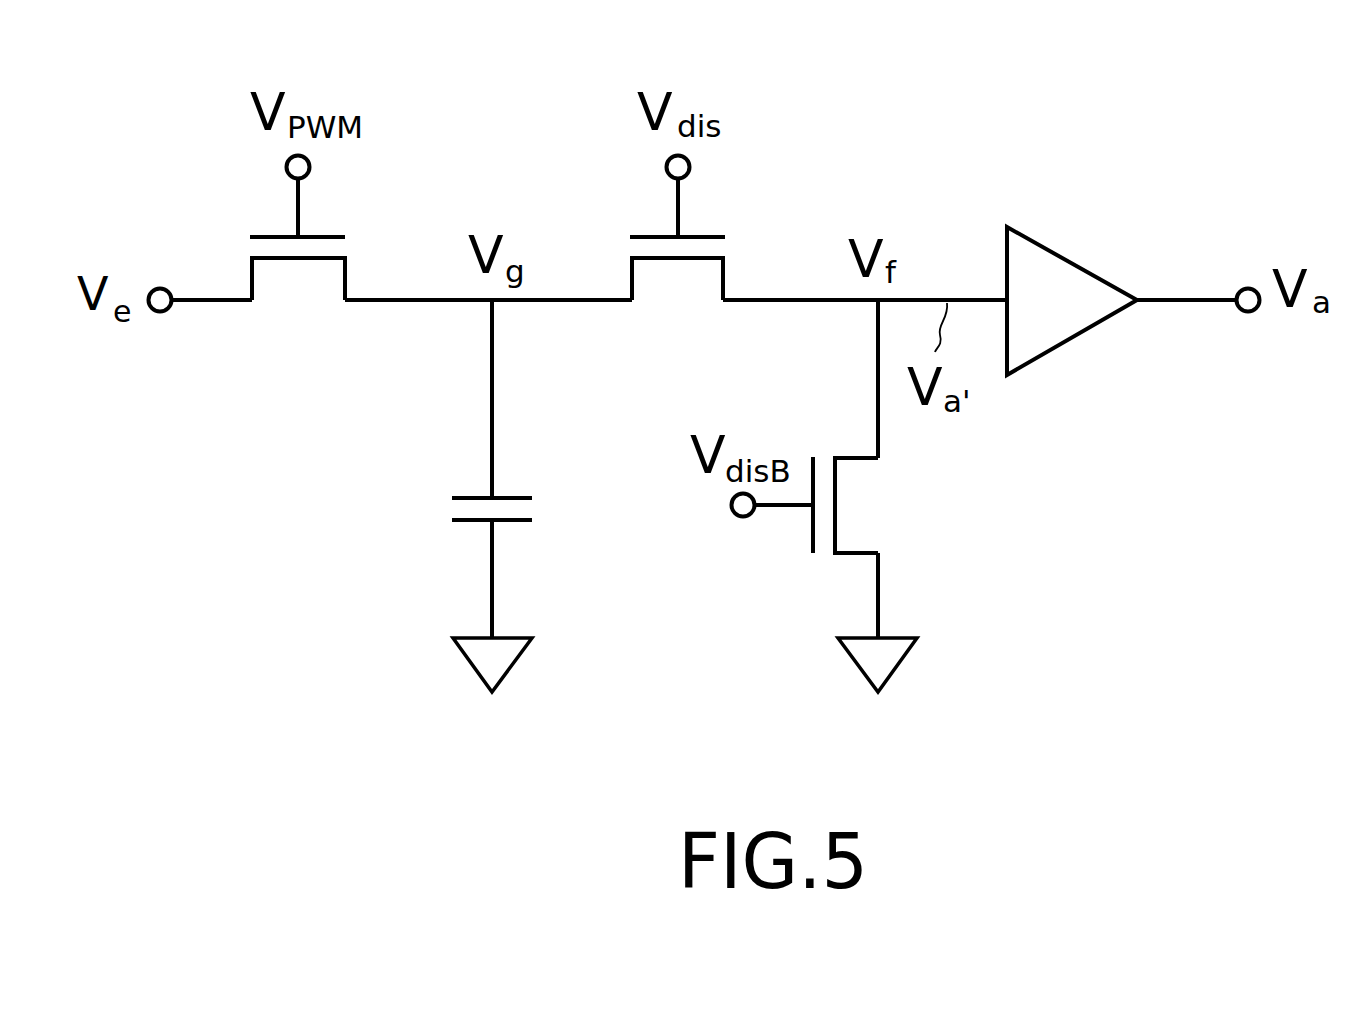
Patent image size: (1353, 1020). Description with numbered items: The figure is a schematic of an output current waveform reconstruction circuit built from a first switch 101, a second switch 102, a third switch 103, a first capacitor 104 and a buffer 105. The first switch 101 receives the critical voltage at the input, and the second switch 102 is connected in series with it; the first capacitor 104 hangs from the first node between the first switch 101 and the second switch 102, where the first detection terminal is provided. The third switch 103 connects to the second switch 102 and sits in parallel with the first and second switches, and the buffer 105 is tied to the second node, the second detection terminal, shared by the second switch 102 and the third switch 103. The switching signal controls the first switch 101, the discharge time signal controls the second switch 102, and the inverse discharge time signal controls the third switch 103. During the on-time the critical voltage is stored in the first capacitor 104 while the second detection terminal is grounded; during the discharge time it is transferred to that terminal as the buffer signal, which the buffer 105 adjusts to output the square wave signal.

The first switch 101 is at (298, 292).
The second switch 102 is at (677, 292).
The third switch 103 is at (880, 503).
The first capacitor 104 is at (443, 503).
The buffer 105 is at (1075, 260).